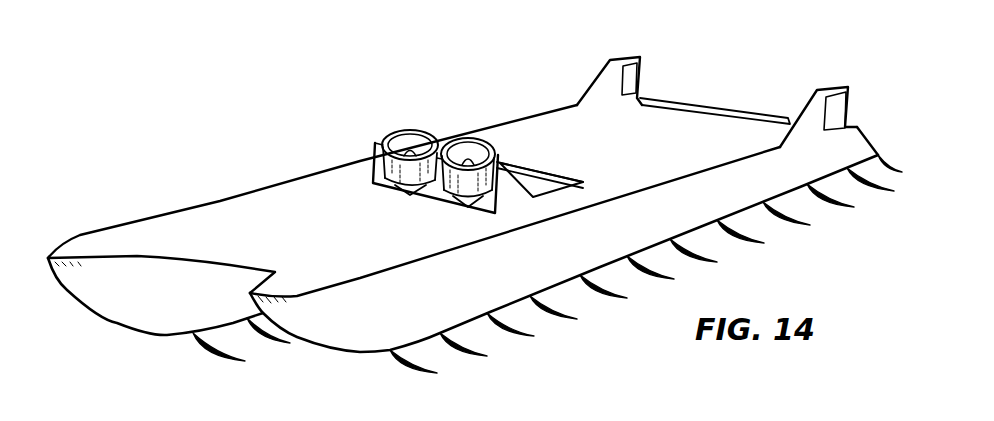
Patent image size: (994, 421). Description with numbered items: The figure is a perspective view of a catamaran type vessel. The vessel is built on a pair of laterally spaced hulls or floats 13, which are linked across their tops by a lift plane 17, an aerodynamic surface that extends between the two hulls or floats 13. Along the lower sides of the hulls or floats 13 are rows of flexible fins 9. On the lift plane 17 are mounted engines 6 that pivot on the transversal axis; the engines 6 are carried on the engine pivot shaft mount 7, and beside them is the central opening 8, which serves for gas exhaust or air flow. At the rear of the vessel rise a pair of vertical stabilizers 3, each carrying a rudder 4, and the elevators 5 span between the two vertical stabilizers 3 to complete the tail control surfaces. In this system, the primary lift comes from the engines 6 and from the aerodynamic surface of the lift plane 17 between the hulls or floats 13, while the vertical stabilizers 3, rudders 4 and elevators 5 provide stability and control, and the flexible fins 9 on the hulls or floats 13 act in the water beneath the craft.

The vertical stabilizers 3 is at (618, 60).
The rudders 4 is at (642, 66).
The elevators 5 is at (748, 116).
The engines 6 is at (470, 136).
The engine pivot shaft mount 7 is at (508, 164).
The central opening 8 is at (548, 176).
The flexible fins 9 is at (290, 343).
The hulls or floats 13 is at (147, 338).
The lift plane 17 is at (177, 252).